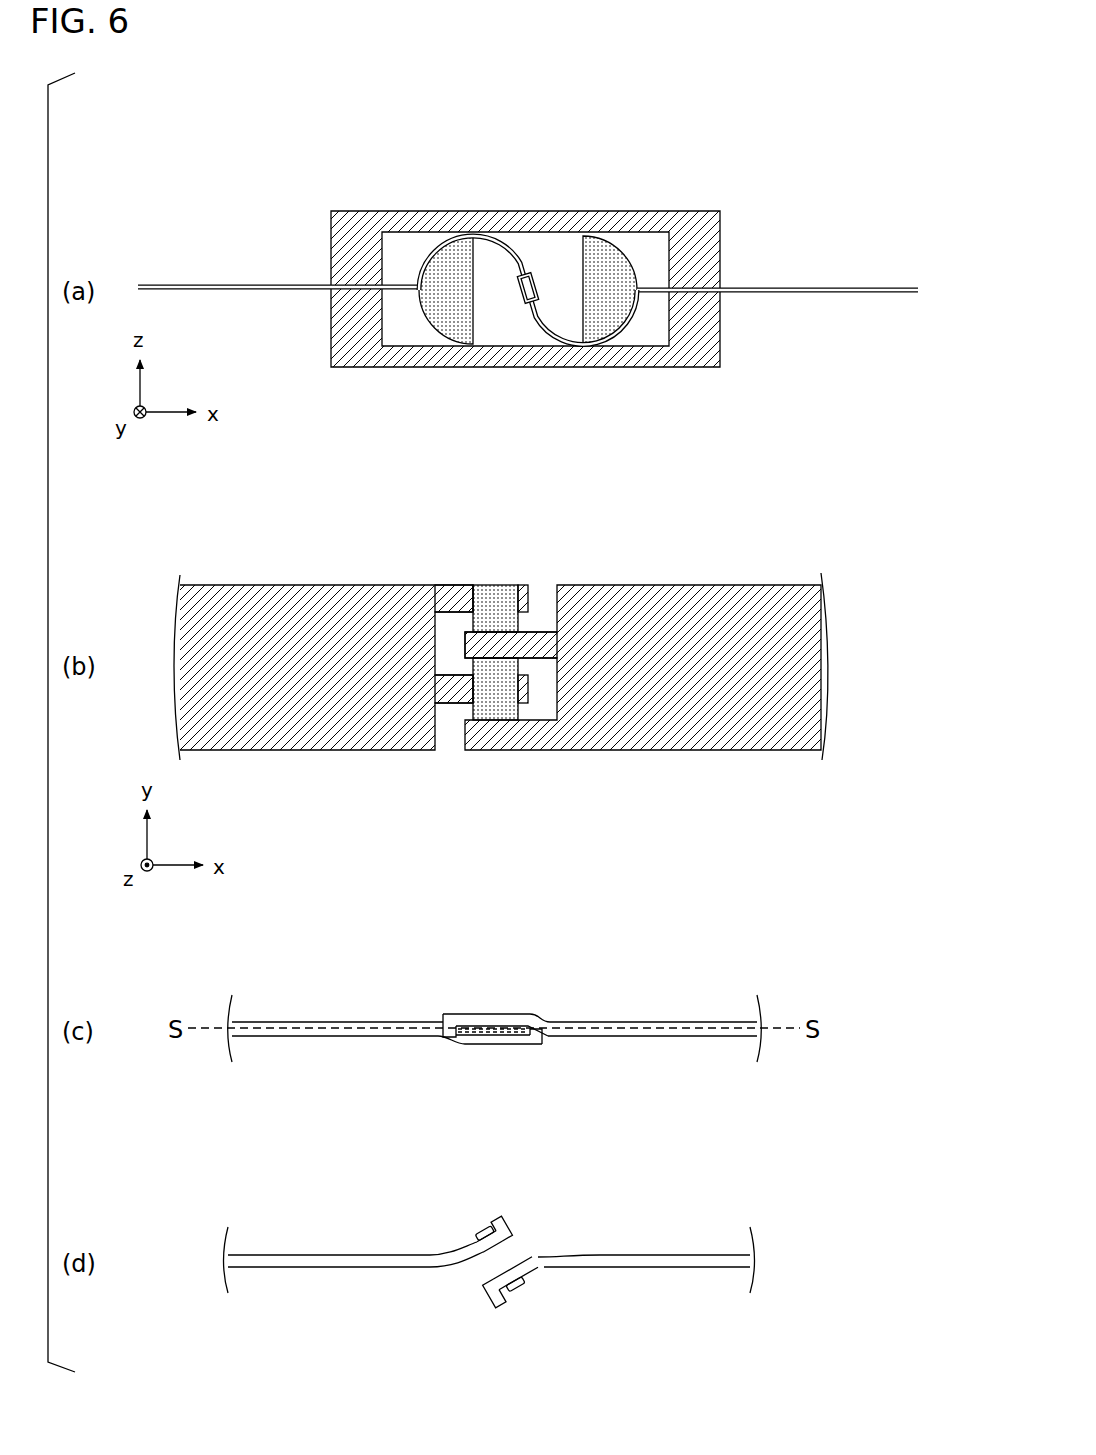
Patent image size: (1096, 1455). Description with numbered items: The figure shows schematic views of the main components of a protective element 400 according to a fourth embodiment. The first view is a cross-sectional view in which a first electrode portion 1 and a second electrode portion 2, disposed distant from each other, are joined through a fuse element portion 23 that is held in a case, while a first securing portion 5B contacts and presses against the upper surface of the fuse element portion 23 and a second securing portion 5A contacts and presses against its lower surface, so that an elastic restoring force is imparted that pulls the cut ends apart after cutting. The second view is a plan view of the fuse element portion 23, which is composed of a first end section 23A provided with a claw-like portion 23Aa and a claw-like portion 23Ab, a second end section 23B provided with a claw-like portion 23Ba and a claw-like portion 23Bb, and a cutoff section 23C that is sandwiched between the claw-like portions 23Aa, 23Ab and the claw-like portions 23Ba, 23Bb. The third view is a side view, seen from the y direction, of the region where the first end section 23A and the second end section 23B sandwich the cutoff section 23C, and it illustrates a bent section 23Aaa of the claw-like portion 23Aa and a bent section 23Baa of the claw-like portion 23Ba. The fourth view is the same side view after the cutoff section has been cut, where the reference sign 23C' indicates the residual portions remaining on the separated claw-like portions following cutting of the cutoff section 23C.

The protective element 400 is at (802, 156).
The first electrode portion 1 is at (183, 283).
The second electrode portion 2 is at (820, 286).
The second securing portion 5A is at (458, 312).
The first securing portion 5B is at (610, 273).
The fuse element portion 23 is at (638, 165).
The first end section 23A is at (520, 252).
The second end section 23B is at (543, 322).
The cutoff section 23C is at (513, 596).
The claw-like portion 23Aa is at (455, 707).
The claw-like portion 23Ab is at (458, 585).
The claw-like portion 23Ba is at (533, 752).
The claw-like portion 23Bb is at (540, 630).
The bent section 23Aaa is at (540, 1046).
The bent section 23Baa is at (447, 1014).
The residual portions 23C' is at (491, 1273).